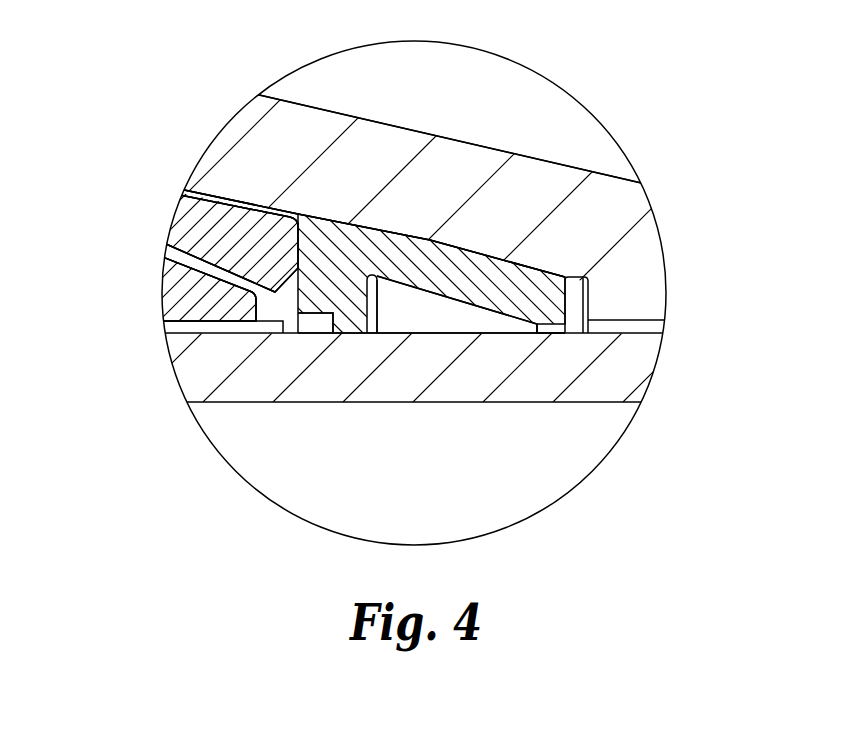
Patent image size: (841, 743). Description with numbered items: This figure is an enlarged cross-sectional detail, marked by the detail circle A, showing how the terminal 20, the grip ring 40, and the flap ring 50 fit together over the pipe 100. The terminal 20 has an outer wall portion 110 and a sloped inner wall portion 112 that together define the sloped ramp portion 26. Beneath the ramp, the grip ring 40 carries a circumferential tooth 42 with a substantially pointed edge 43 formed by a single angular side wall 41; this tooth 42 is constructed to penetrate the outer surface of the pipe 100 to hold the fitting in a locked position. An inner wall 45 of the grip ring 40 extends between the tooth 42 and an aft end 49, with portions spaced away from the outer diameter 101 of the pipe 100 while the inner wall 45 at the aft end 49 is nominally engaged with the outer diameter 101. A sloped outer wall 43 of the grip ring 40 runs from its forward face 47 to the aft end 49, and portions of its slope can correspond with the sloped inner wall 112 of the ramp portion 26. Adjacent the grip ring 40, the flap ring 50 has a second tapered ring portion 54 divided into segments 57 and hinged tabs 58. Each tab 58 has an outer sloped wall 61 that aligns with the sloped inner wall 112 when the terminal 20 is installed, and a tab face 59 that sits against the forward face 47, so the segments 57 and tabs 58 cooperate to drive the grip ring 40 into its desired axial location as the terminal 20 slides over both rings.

The outer wall portion 110 is at (304, 101).
The ramp portion 26 is at (387, 147).
The terminal 20 is at (467, 170).
The locating flange or tab face 59 is at (298, 220).
The sloped inner wall portion 112 is at (240, 212).
The outer sloped wall 61 is at (210, 187).
The tab 58 is at (200, 230).
The segment 57 is at (168, 282).
The second tapered ring portion 54 is at (172, 323).
The flap ring 50 is at (132, 248).
The forward face 47 is at (290, 306).
The grip ring 40 is at (435, 275).
The tooth 42 is at (340, 335).
The pointed edge / sloped outer wall 43 is at (543, 270).
The angular side wall 41 is at (362, 338).
The inner wall 45 is at (470, 308).
The aft end 49 is at (592, 300).
The outer diameter 101 is at (668, 322).
The pipe 100 is at (607, 373).
The detail area A is at (549, 504).